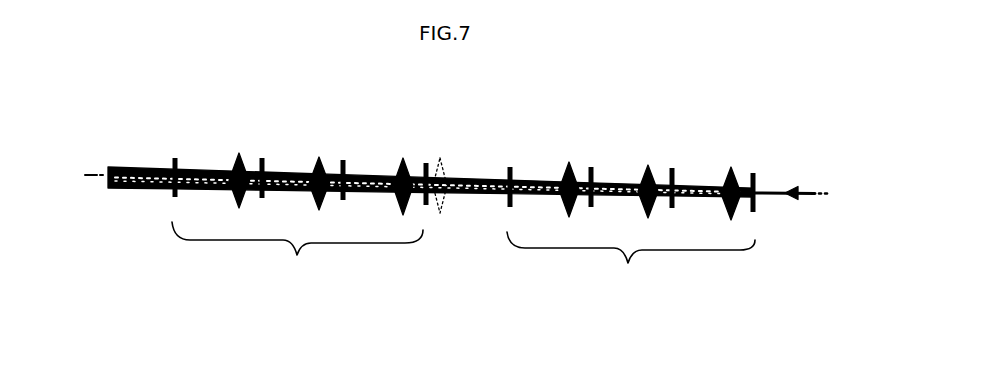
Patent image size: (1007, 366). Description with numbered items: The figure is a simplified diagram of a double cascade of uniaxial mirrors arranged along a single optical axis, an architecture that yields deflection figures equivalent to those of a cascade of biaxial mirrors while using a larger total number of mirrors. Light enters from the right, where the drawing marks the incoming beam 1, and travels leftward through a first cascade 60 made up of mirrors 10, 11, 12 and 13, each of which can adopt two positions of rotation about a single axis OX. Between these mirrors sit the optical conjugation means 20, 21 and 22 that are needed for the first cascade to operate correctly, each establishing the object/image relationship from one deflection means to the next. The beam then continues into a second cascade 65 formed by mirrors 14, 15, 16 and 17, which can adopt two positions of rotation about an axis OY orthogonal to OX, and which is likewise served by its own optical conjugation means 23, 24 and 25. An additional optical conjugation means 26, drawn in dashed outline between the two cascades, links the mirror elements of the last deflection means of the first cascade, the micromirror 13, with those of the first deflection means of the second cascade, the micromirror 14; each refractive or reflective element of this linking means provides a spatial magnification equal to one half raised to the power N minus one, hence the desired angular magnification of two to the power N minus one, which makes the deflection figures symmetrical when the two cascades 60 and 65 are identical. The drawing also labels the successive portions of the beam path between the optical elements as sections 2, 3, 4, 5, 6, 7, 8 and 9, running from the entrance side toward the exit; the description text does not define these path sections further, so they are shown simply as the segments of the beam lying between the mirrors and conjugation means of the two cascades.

The output laser beam 1 is at (783, 187).
The beam section 2 is at (695, 195).
The beam section 3 is at (602, 192).
The beam section 4 is at (530, 190).
The beam section 5 is at (467, 192).
The beam section 6 is at (385, 192).
The beam section 7 is at (292, 190).
The beam section 8 is at (205, 190).
The beam section 9 is at (140, 192).
The mirror 10 is at (762, 185).
The mirror 11 is at (672, 168).
The mirror 12 is at (591, 163).
The mirror 13 is at (508, 163).
The mirror 14 is at (423, 167).
The mirror 15 is at (343, 157).
The mirror 16 is at (262, 153).
The mirror 17 is at (176, 152).
The optical conjugation means 20 is at (725, 168).
The optical conjugation means 21 is at (642, 168).
The optical conjugation means 22 is at (565, 163).
The optical conjugation means 23 is at (397, 162).
The optical conjugation means 24 is at (314, 153).
The optical conjugation means 25 is at (235, 152).
The additional optical conjugation means 26 is at (442, 160).
The first cascade 60 is at (631, 262).
The second cascade 65 is at (297, 252).